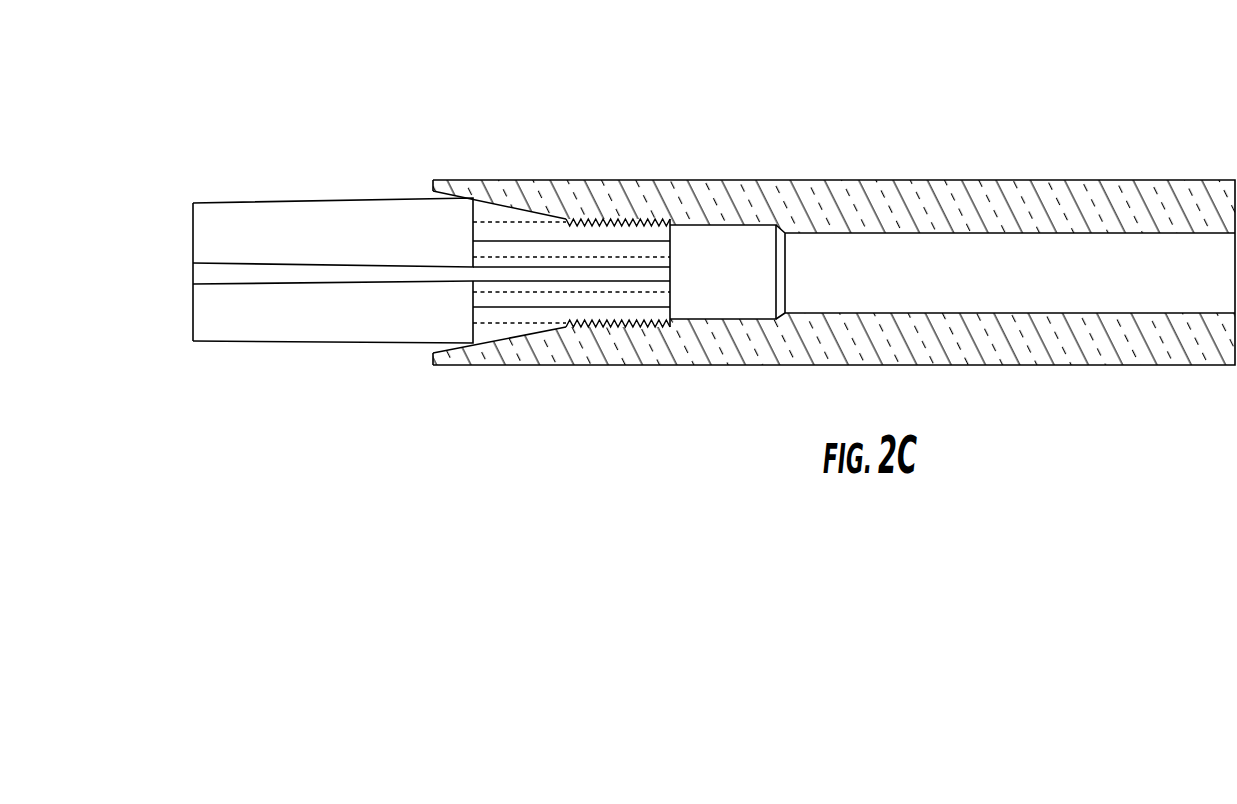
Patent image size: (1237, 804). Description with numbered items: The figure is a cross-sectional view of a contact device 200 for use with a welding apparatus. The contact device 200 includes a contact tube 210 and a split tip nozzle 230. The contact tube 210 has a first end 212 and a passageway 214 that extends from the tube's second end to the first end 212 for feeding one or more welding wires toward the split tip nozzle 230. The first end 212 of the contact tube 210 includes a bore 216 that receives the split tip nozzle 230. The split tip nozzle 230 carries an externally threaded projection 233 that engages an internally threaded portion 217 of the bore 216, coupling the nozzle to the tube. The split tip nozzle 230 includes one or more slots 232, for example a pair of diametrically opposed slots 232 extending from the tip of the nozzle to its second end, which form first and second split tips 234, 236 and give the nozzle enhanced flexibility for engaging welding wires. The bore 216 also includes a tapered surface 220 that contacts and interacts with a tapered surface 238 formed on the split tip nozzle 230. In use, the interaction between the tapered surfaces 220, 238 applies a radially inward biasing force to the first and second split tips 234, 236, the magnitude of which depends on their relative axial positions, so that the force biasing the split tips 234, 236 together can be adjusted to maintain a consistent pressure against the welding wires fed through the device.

The contact device 200 is at (278, 77).
The contact tube 210 is at (1138, 180).
The first end 212 is at (562, 180).
The passageway 214 is at (972, 250).
The bore 216 is at (508, 302).
The internally threaded portion 217 is at (635, 217).
The externally threaded projection 233 is at (639, 211).
The tapered surface 220 is at (520, 340).
The tapered surface 238 is at (505, 321).
The split tip nozzle 230 is at (230, 201).
The slots 232 is at (327, 282).
The first split tip 234 is at (315, 212).
The second split tip 236 is at (210, 316).